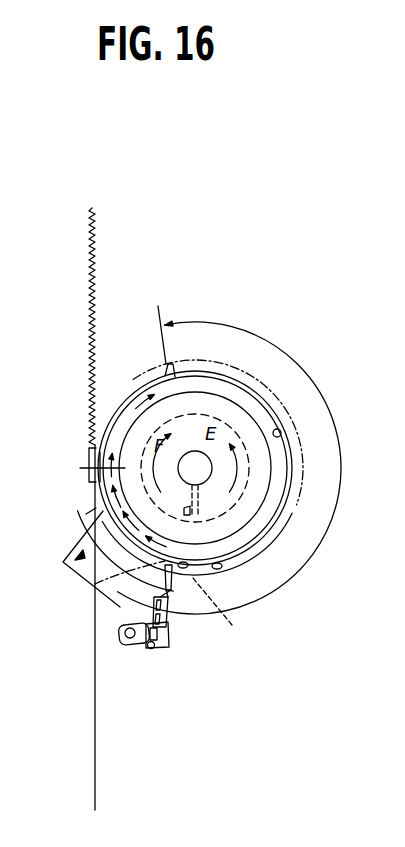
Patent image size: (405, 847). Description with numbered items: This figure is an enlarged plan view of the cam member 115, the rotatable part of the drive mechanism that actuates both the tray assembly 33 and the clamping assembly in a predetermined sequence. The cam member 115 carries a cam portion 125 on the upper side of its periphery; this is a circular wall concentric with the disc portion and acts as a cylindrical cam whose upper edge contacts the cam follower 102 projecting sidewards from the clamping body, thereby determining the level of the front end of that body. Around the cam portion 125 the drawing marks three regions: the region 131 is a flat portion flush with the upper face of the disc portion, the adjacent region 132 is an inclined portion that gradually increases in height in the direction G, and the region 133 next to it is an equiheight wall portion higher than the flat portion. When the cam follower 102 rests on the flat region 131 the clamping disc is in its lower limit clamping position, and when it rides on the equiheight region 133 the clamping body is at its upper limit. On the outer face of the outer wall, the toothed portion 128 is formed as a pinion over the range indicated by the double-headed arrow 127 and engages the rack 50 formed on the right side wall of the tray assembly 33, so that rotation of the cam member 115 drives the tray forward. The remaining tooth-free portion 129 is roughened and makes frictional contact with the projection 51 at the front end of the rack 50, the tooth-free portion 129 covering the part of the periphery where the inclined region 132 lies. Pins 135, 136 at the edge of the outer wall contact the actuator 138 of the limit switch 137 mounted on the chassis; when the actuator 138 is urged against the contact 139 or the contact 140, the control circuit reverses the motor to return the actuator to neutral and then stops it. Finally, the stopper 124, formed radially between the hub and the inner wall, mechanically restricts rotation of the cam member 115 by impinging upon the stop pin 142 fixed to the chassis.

The cam member 115 is at (238, 352).
The cam portion 125 is at (283, 385).
The double-headed arrow 127 is at (318, 386).
The toothed portion 128 is at (300, 492).
The tooth-free portion 129 is at (138, 410).
The region 133 is at (281, 431).
The stopper 124 is at (200, 505).
The rack 50 is at (98, 247).
The projection 51 is at (90, 447).
The region 131 is at (90, 493).
The region 132 is at (135, 428).
The cam follower 102 is at (86, 514).
The stop pin 142 is at (95, 584).
The actuator 138 is at (165, 572).
The contact 140 is at (120, 634).
The contact 139 is at (169, 642).
The limit switch 137 is at (153, 649).
The pin 135 is at (225, 568).
The pin 136 is at (232, 610).
The tray assembly 33 is at (97, 742).
The direction G is at (148, 404).